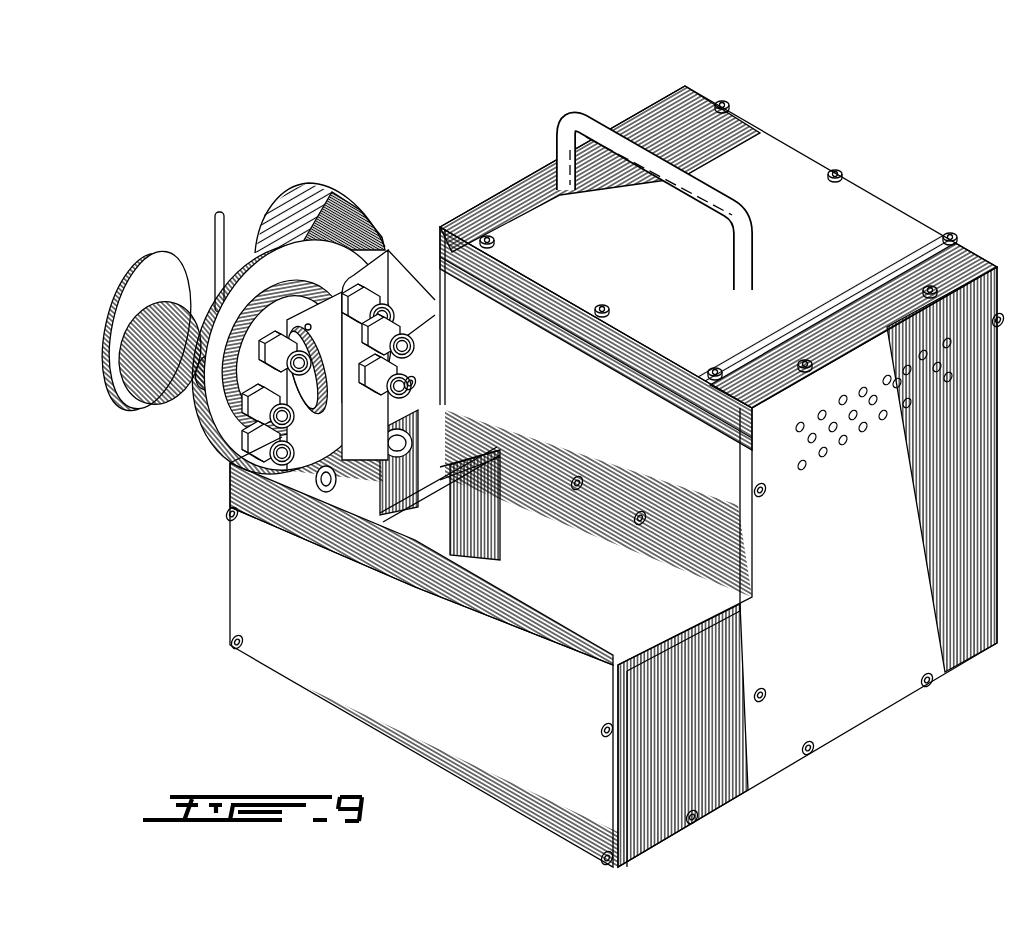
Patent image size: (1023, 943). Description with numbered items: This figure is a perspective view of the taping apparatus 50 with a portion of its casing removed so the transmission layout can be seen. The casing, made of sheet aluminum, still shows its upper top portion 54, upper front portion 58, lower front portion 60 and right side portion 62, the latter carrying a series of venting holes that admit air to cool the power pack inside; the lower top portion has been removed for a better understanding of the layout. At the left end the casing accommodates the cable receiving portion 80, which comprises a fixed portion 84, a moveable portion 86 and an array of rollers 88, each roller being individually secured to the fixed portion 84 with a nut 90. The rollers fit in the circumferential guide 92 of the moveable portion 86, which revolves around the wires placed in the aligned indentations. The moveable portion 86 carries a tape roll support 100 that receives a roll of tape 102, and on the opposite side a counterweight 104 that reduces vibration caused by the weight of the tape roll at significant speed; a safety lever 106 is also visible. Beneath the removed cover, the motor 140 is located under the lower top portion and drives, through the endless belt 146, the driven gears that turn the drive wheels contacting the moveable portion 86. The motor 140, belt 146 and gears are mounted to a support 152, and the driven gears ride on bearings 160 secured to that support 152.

The taping apparatus 50 is at (935, 155).
The upper top portion 54 is at (619, 254).
The upper front portion 58 is at (556, 407).
The lower front portion 60 is at (366, 656).
The right side portion 62 is at (789, 604).
The cable receiving portion 80 is at (244, 315).
The fixed portion 84 is at (140, 256).
The moveable portion 86 is at (388, 250).
The rollers 88 is at (212, 425).
The nut 90 is at (233, 462).
The circumferential guide 92 is at (293, 290).
The tape roll support 100 is at (336, 218).
The roll of tape 102 is at (305, 190).
The counterweight 104 is at (136, 387).
The safety lever 106 is at (223, 215).
The motor 140 is at (568, 610).
The endless belt 146 is at (283, 460).
The support 152 is at (359, 480).
The bearings 160 is at (422, 440).